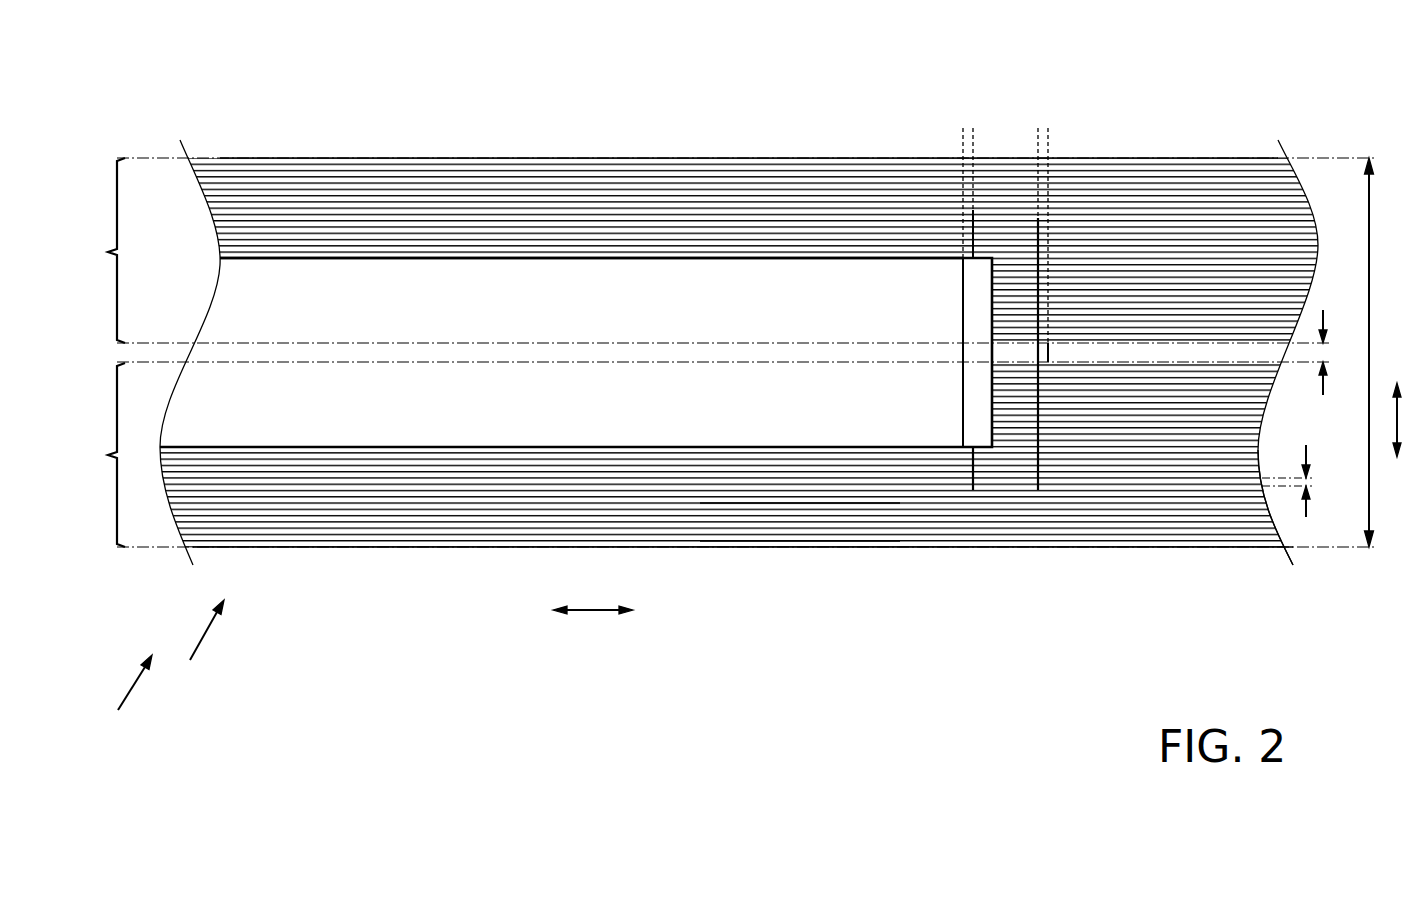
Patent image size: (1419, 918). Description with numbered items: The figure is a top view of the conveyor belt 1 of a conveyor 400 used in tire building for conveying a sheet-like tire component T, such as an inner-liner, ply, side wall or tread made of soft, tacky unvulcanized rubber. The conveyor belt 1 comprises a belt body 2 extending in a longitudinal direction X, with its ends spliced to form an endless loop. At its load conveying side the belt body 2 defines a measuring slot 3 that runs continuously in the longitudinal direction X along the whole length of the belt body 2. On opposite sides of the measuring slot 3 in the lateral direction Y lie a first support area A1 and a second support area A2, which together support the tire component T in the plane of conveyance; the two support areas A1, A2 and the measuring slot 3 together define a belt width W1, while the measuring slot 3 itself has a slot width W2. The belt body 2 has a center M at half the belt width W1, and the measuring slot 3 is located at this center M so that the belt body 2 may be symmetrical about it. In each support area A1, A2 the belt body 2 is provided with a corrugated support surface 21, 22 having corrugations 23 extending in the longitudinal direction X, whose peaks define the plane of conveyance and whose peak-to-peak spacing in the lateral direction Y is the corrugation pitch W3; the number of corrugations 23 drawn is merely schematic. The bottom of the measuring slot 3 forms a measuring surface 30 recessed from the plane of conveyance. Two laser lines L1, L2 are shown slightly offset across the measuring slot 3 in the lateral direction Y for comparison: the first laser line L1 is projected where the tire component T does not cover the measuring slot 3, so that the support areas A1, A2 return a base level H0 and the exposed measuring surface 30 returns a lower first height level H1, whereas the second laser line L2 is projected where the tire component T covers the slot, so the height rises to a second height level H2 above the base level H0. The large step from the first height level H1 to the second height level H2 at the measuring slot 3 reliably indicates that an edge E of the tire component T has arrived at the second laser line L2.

The conveyor belt 1 is at (201, 641).
The belt body 2 is at (393, 515).
The measuring slot 3 is at (1248, 350).
The corrugated support surface 21 is at (712, 512).
The corrugated support surface 22 is at (1147, 177).
The corrugations 23 is at (832, 505).
The measuring surface 30 is at (1277, 377).
The conveyor 400 is at (122, 700).
The base level H0 is at (1036, 140).
The first height level H1 is at (1047, 140).
The second height level H2 is at (963, 140).
The first laser line L1 is at (1038, 455).
The second laser line L2 is at (973, 470).
The edge E is at (990, 355).
The tire component T is at (337, 437).
The center M is at (275, 353).
The first support area A1 is at (101, 455).
The second support area A2 is at (96, 250).
The belt width W1 is at (1390, 352).
The slot width W2 is at (1343, 348).
The corrugation pitch W3 is at (1307, 486).
The longitudinal direction X is at (593, 620).
The lateral direction Y is at (1406, 420).